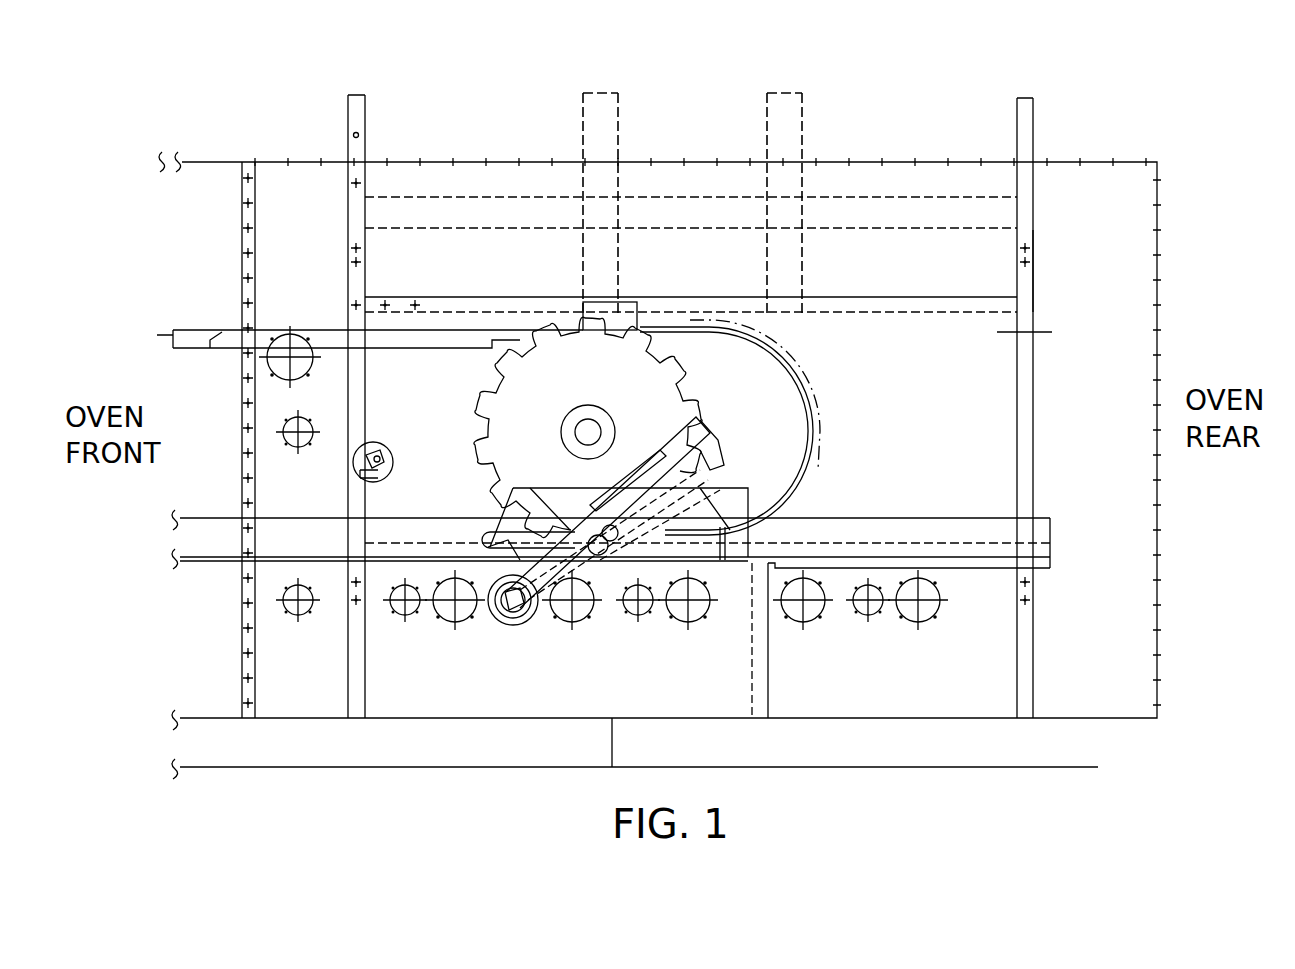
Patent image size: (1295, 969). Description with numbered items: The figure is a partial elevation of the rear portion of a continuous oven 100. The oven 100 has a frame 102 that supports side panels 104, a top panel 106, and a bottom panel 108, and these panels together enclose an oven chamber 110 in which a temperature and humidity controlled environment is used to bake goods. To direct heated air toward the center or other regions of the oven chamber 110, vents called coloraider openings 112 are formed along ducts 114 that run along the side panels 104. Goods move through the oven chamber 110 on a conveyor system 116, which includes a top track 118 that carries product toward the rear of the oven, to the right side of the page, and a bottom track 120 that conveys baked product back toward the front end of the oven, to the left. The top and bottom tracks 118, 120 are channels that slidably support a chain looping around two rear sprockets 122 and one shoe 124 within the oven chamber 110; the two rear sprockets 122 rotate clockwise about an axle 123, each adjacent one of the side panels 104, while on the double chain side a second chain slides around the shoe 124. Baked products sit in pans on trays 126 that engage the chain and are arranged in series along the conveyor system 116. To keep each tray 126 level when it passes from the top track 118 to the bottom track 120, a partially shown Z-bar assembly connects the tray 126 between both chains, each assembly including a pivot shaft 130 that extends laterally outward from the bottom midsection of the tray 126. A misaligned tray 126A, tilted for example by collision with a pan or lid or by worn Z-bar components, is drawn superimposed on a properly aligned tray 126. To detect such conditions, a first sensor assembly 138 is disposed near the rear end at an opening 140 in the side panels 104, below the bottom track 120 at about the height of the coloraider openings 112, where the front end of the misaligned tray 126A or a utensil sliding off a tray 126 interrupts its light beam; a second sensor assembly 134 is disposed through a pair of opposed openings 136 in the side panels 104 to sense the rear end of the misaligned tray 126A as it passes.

The oven 100 is at (155, 113).
The frame 102 is at (355, 110).
The side panels 104 is at (327, 213).
The top panel 106 is at (925, 157).
The bottom panel 108 is at (1005, 723).
The oven chamber 110 is at (992, 272).
The coloraider openings 112 is at (925, 617).
The ducts 114 is at (980, 607).
The conveyor system 116 is at (233, 385).
The top track 118 is at (330, 345).
The bottom track 120 is at (213, 535).
The rear sprocket 122 is at (637, 383).
The axle 123 is at (585, 428).
The shoe 124 is at (815, 440).
The tray 126 is at (740, 563).
The misaligned tray 126A is at (490, 557).
The pivot shaft 130 is at (602, 557).
The second sensor assembly 134 is at (395, 478).
The openings 136 is at (378, 442).
The first sensor assembly 138 is at (527, 628).
The opening 140 is at (503, 635).